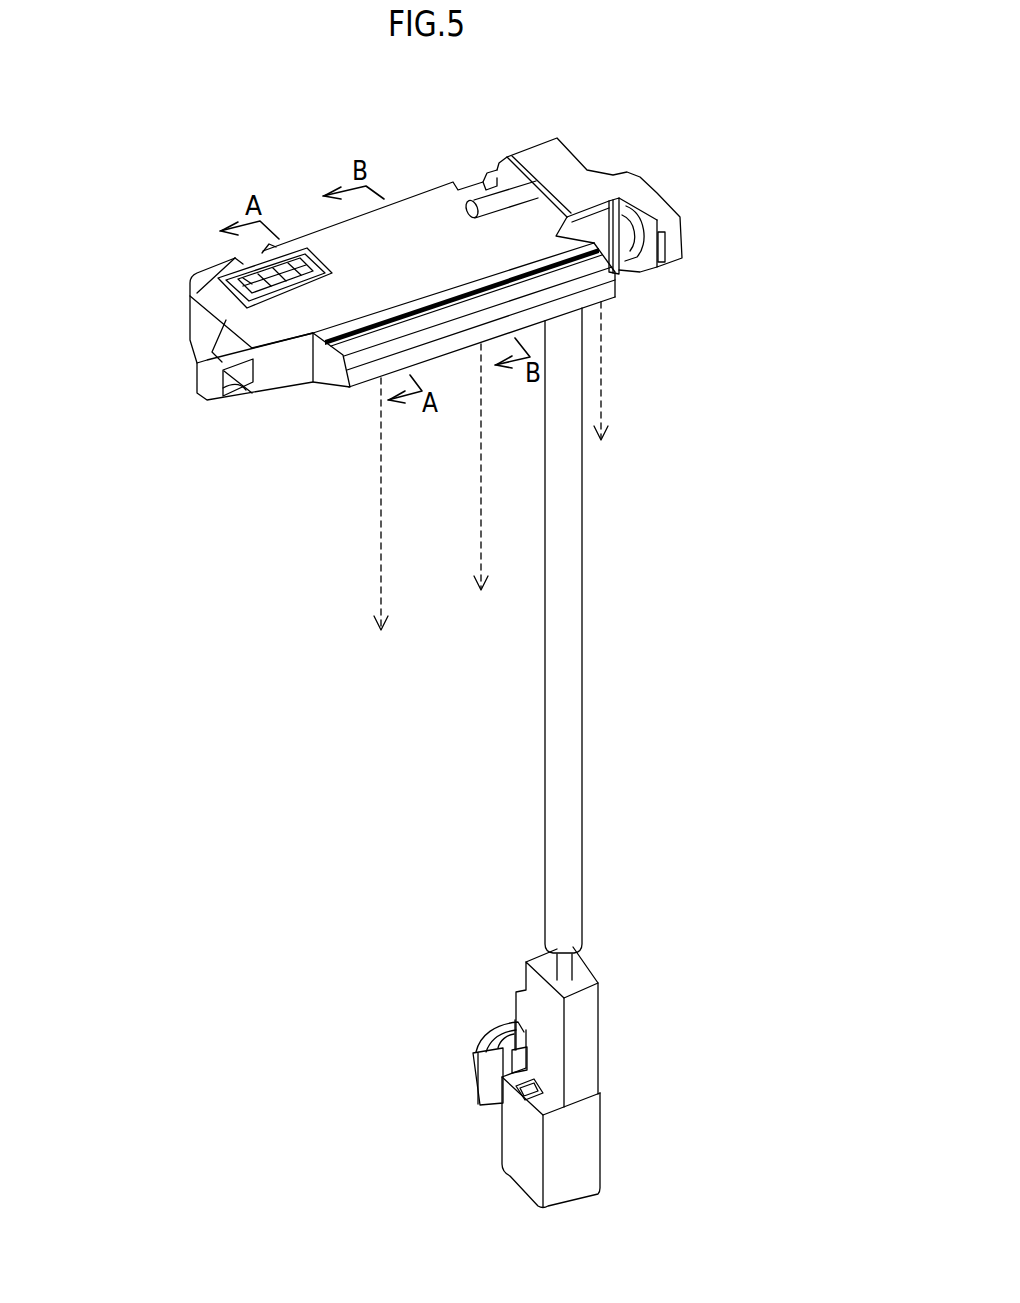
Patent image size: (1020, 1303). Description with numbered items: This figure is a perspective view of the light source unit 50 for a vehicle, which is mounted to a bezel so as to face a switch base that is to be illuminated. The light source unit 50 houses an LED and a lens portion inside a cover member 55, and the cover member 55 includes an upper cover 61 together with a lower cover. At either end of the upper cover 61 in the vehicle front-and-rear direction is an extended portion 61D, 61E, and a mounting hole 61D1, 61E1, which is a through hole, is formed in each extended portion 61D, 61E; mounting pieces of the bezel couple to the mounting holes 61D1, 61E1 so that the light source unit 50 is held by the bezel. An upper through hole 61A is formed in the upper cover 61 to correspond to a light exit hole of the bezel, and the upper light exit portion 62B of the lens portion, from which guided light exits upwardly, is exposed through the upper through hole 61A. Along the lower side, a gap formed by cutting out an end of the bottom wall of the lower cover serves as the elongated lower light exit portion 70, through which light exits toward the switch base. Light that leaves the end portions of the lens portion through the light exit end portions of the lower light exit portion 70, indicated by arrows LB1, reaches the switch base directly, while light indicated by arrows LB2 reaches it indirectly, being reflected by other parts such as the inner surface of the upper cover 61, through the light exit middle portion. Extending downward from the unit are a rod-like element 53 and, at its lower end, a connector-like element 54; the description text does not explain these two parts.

The light source unit 50 is at (613, 150).
The light guide rod 53 is at (572, 458).
The connector 54 is at (589, 1035).
The cover member 55 is at (435, 287).
The upper cover 61 is at (432, 213).
The upper through hole 61A is at (293, 257).
The extended portion 61D is at (212, 347).
The mounting hole 61D1 is at (224, 383).
The extended portion 61E is at (658, 197).
The mounting hole 61E1 is at (633, 247).
The upper light exit portion 62B is at (210, 286).
The lower light exit portion 70 is at (367, 383).
The light (arrows LB1) LB1 is at (381, 533).
The light (arrows LB2) LB2 is at (481, 493).